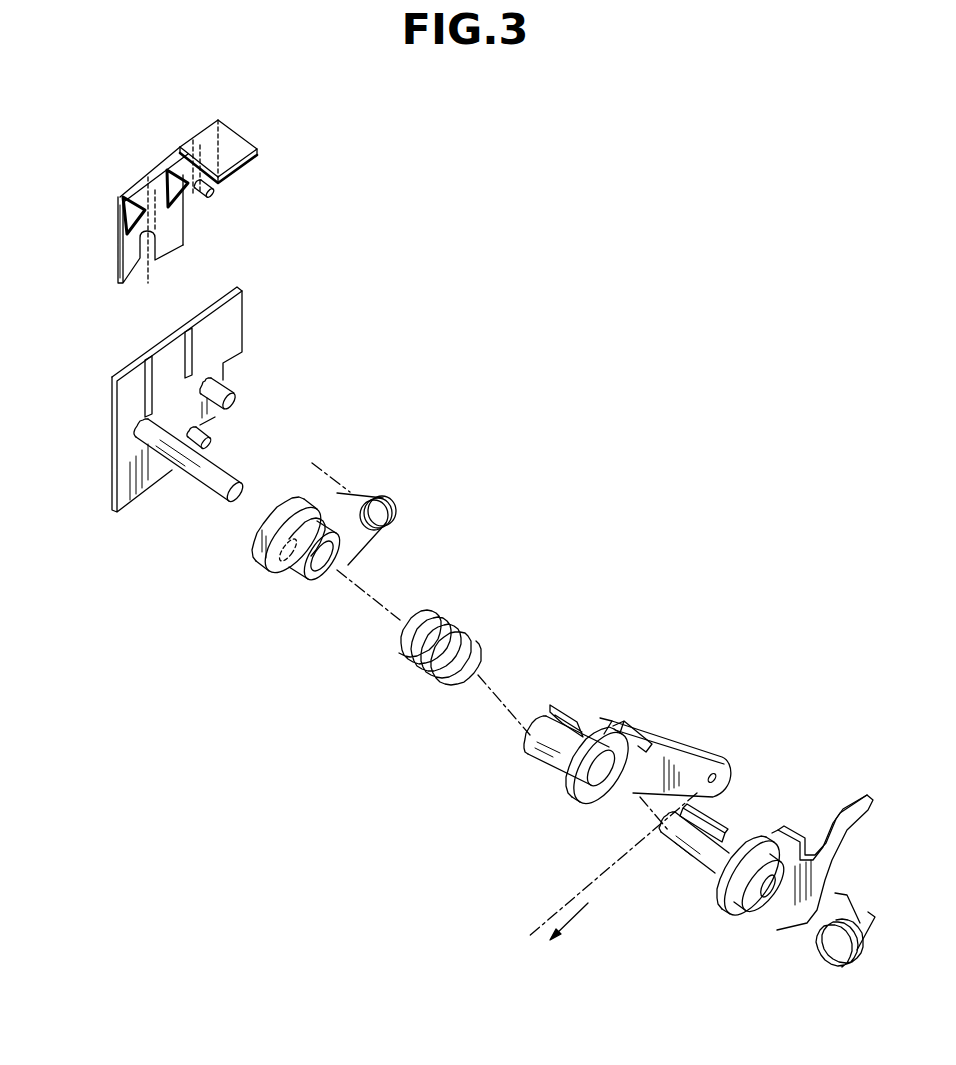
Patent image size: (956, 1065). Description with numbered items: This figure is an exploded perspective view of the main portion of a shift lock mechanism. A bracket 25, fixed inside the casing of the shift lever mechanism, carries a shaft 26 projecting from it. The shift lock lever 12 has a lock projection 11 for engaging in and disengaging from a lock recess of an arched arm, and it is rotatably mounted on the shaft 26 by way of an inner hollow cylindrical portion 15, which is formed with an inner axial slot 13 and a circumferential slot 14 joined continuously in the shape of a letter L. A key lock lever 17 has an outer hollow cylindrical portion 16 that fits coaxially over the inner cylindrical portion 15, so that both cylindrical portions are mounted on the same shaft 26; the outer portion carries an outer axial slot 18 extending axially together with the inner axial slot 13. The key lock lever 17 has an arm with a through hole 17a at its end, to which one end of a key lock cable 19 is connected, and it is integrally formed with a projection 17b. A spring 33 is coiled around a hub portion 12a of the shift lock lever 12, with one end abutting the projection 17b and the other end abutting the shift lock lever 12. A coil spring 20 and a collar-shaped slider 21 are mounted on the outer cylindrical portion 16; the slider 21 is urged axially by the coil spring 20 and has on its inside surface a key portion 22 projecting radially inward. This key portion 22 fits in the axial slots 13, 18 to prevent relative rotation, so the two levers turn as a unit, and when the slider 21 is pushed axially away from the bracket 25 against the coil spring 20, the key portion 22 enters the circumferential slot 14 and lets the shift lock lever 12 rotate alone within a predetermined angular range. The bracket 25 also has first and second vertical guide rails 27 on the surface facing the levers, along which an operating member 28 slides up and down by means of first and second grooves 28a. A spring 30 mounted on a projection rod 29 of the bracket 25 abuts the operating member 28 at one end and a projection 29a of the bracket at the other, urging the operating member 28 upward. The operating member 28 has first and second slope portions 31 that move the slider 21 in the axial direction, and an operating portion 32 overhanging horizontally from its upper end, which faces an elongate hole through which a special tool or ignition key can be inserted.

The lock projection 11 is at (778, 832).
The shift lock lever 12 is at (838, 872).
The hub portion 12a is at (738, 893).
The inner axial slot 13 is at (660, 842).
The circumferential slot 14 is at (727, 838).
The inner hollow cylindrical portion 15 is at (692, 866).
The outer hollow cylindrical portion 16 is at (541, 763).
The key lock lever 17 is at (675, 738).
The through hole 17a is at (702, 764).
The projection 17b is at (643, 727).
The outer axial slot 18 is at (556, 705).
The key lock cable 19 is at (590, 885).
The coil spring 20 is at (463, 626).
The slider 21 is at (270, 565).
The key portion 22 is at (280, 578).
The bracket 25 is at (120, 372).
The shaft 26 is at (203, 494).
The vertical guide rails 27 is at (193, 352).
The operating member 28 is at (120, 244).
The grooves 28a is at (220, 200).
The projection rod 29 is at (238, 402).
The projection 29a is at (212, 447).
The spring 30 is at (399, 502).
The slope portions 31 is at (187, 202).
The operating portion 32 is at (235, 145).
The spring 33 is at (838, 971).